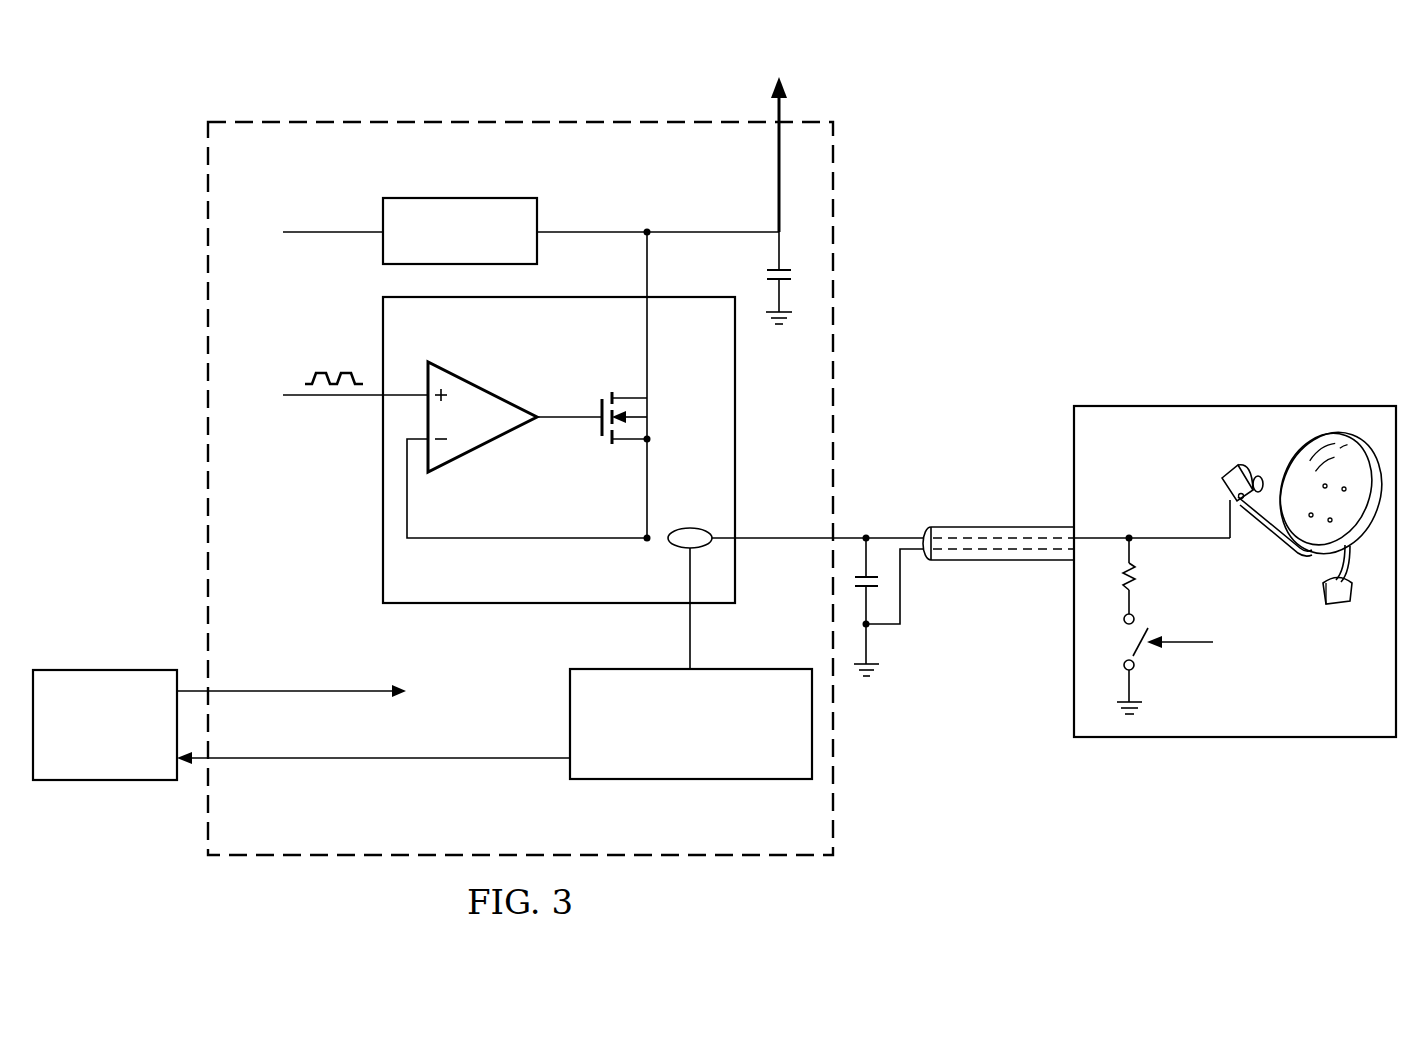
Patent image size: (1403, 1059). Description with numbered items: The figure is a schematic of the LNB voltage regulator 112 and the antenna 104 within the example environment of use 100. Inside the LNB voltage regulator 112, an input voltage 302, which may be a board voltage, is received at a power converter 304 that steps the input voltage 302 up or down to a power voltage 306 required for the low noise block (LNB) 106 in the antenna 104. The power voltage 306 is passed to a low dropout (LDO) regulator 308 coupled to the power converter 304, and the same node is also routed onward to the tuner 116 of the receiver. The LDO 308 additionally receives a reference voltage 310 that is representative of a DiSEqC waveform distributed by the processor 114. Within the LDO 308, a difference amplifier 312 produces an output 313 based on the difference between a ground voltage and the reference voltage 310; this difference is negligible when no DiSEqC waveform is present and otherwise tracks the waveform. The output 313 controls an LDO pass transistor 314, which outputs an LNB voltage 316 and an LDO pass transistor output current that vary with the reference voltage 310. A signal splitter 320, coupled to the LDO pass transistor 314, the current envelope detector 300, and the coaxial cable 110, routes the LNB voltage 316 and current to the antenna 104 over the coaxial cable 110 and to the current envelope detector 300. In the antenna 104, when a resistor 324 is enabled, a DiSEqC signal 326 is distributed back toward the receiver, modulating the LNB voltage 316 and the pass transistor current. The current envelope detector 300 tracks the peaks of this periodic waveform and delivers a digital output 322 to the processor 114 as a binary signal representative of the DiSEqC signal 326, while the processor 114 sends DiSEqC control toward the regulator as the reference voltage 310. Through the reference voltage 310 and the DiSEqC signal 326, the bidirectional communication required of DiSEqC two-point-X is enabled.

The environment of use 100 is at (448, 70).
The antenna 104 is at (1254, 398).
The low noise block (LNB) 106 is at (1236, 472).
The coaxial cable 110 is at (998, 562).
The LNB voltage regulator 112 is at (200, 278).
The processor 114 is at (105, 782).
The tuner 116 is at (780, 188).
The current envelope detector 300 is at (680, 782).
The input voltage 302 is at (346, 229).
The power converter 304 is at (460, 197).
The power voltage 306 is at (592, 230).
The low dropout (LDO) regulator 308 is at (376, 320).
The reference voltage 310 is at (336, 401).
The difference amplifier 312 is at (488, 390).
The output of the difference amplifier 313 is at (572, 413).
The LDO pass transistor 314 is at (600, 430).
The LNB voltage 316 is at (645, 486).
The signal splitter 320 is at (676, 550).
The digital output 322 is at (393, 763).
The resistor 324 is at (1136, 580).
The DiSEqC signal 326 is at (1184, 648).